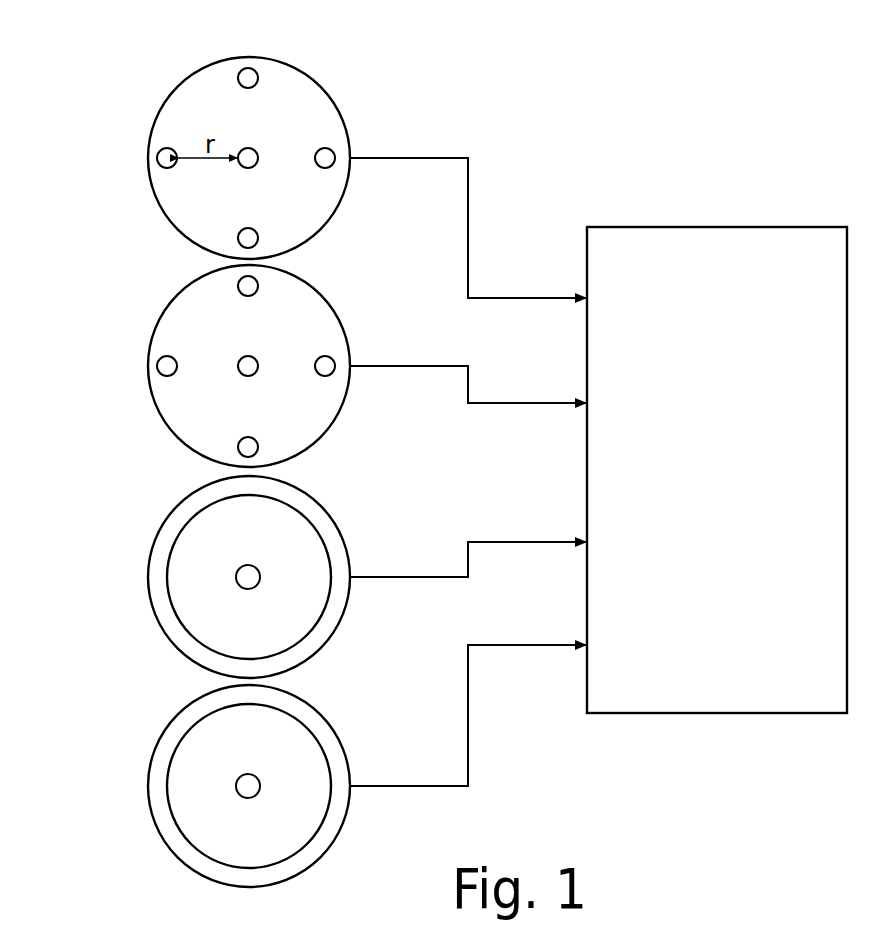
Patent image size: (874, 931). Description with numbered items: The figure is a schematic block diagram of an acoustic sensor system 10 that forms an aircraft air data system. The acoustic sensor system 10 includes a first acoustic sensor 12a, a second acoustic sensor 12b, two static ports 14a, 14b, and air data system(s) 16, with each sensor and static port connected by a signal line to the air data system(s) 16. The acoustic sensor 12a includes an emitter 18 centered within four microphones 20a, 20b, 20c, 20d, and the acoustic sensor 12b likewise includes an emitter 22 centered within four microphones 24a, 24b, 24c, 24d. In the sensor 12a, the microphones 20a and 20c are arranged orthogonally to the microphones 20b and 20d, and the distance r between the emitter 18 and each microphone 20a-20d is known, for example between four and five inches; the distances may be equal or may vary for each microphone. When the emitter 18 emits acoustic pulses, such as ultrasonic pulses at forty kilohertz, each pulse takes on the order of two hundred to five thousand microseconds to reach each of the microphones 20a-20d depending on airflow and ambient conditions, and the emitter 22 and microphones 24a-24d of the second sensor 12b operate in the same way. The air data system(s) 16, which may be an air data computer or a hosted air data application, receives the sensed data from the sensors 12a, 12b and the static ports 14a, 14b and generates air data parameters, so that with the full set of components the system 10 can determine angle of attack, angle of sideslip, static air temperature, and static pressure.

The acoustic sensor system 10 is at (742, 103).
The acoustic sensor 12a is at (170, 95).
The acoustic sensor 12b is at (157, 328).
The static port 14a is at (148, 577).
The static port 14b is at (148, 777).
The air data system(s) 16 is at (788, 277).
The emitter 18 is at (257, 152).
The microphone 20a is at (247, 68).
The microphone 20b is at (325, 148).
The microphone 20c is at (242, 236).
The microphone 20d is at (158, 158).
The emitter 22 is at (260, 360).
The microphone 24a is at (257, 278).
The microphone 24b is at (327, 357).
The microphone 24c is at (242, 445).
The microphone 24d is at (157, 367).